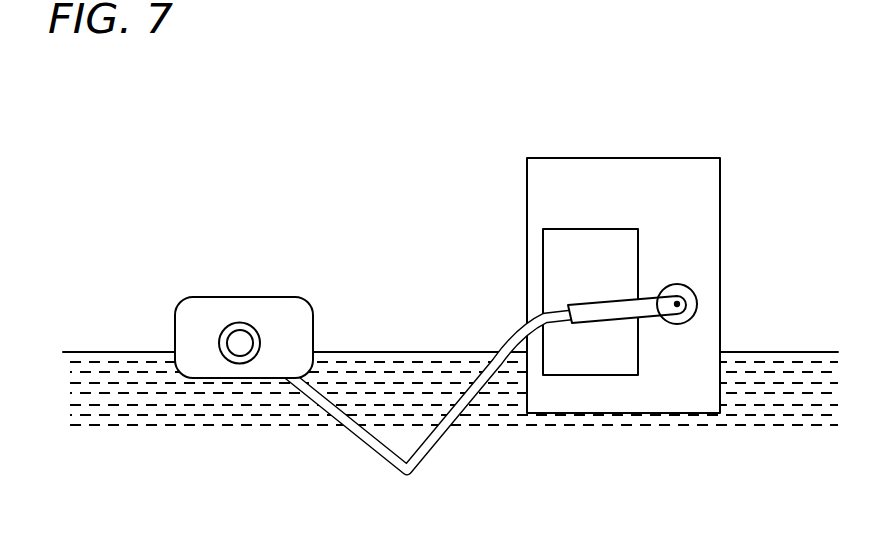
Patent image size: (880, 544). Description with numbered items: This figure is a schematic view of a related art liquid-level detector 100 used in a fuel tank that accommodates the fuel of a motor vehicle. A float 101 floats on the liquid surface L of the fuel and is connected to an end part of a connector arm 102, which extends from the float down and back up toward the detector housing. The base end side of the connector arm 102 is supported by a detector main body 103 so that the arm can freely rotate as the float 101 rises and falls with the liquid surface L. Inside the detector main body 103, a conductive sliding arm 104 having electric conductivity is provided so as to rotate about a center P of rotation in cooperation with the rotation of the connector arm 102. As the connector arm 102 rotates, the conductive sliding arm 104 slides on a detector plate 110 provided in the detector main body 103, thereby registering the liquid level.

The liquid-level detector 100 is at (373, 301).
The float 101 is at (213, 310).
The connector arm 102 is at (371, 454).
The detector main body 103 is at (542, 157).
The conductive sliding arm 104 is at (605, 297).
The detector plate 110 is at (578, 248).
The liquid surface L is at (118, 358).
The center of rotation P is at (678, 304).